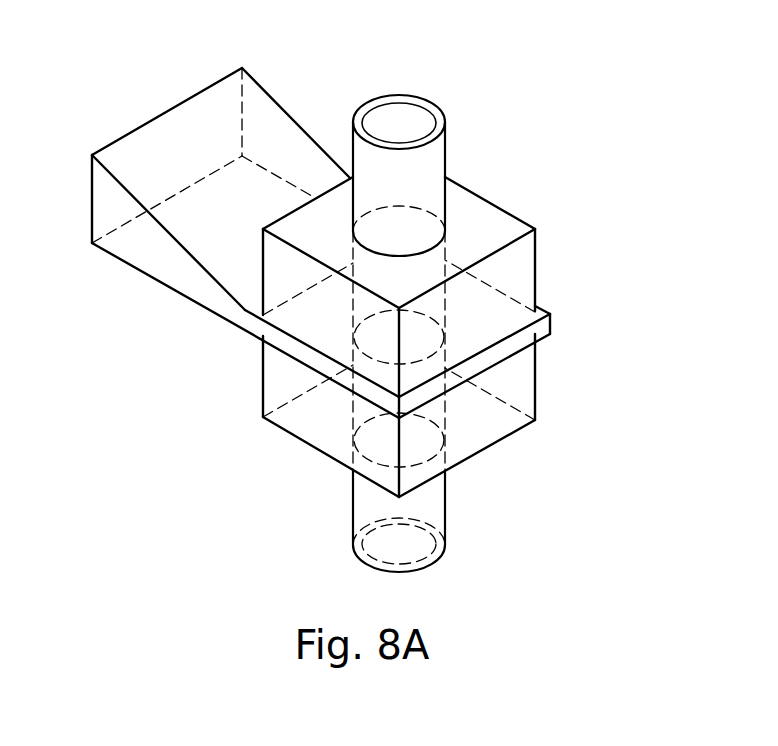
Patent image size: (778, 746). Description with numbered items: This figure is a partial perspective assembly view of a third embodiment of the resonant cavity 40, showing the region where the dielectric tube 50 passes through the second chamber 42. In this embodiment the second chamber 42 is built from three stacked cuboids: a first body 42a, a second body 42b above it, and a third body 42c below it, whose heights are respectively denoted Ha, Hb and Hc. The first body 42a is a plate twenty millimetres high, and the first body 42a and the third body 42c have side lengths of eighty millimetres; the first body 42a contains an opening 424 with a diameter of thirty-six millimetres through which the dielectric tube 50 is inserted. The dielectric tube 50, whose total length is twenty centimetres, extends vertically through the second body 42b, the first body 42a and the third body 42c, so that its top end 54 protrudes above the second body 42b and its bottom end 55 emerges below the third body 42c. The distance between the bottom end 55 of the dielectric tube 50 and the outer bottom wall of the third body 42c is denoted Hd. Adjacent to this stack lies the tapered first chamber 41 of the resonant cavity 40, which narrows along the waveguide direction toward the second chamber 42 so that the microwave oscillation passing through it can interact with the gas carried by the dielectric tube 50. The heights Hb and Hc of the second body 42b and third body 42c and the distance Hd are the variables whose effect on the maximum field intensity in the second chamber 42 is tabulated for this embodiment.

The resonant cavity 40 is at (234, 209).
The first chamber 41 is at (148, 253).
The second chamber 42 is at (482, 341).
The first body 42a is at (538, 332).
The second body 42b is at (515, 287).
The third body 42c is at (460, 419).
The opening 424 is at (443, 412).
The dielectric tube 50 is at (482, 333).
The top end 54 is at (430, 104).
The bottom end 55 is at (437, 562).